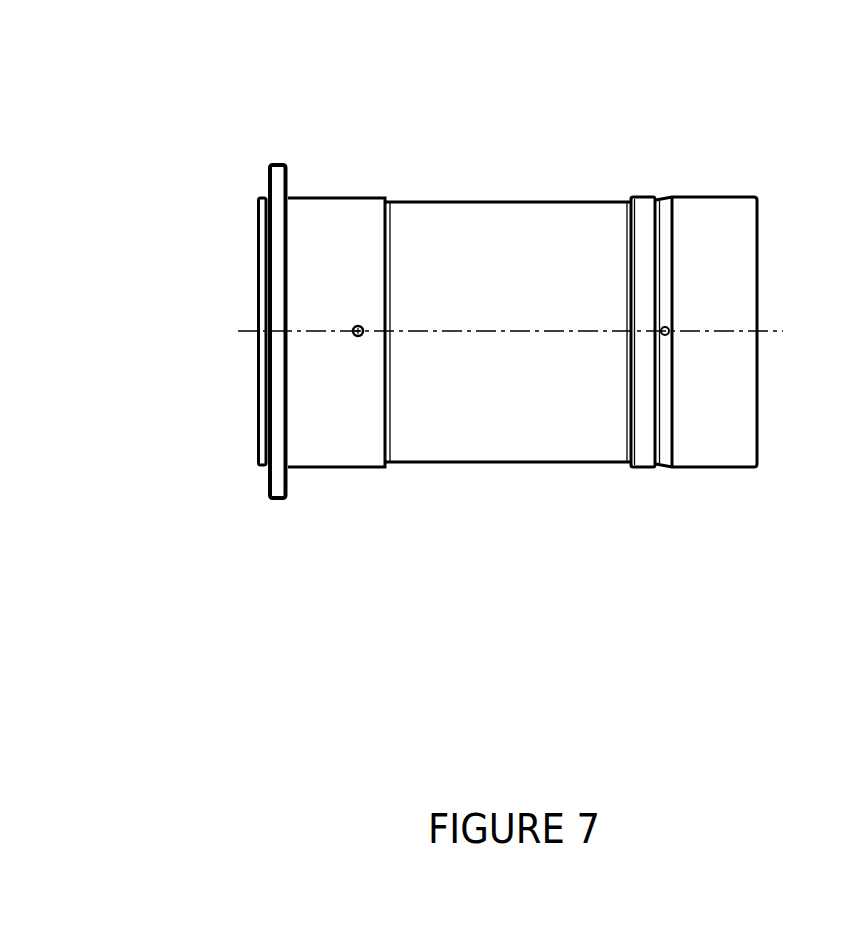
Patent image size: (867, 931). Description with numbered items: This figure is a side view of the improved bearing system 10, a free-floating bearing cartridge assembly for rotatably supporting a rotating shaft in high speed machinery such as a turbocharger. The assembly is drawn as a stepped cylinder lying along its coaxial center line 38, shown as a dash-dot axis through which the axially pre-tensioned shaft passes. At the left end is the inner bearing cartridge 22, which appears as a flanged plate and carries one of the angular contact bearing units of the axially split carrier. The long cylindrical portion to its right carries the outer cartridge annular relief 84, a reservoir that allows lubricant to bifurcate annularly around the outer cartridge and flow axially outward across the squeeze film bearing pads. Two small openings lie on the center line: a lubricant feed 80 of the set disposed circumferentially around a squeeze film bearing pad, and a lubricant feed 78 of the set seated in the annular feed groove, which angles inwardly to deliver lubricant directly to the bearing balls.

The improved bearing system 10 is at (603, 128).
The inner bearing cartridge 22 is at (239, 445).
The coaxial center line 38 is at (775, 331).
The lubricant feeds 78 is at (669, 328).
The lubricant feeds 80 is at (355, 327).
The outer cartridge annular relief 84 is at (575, 271).